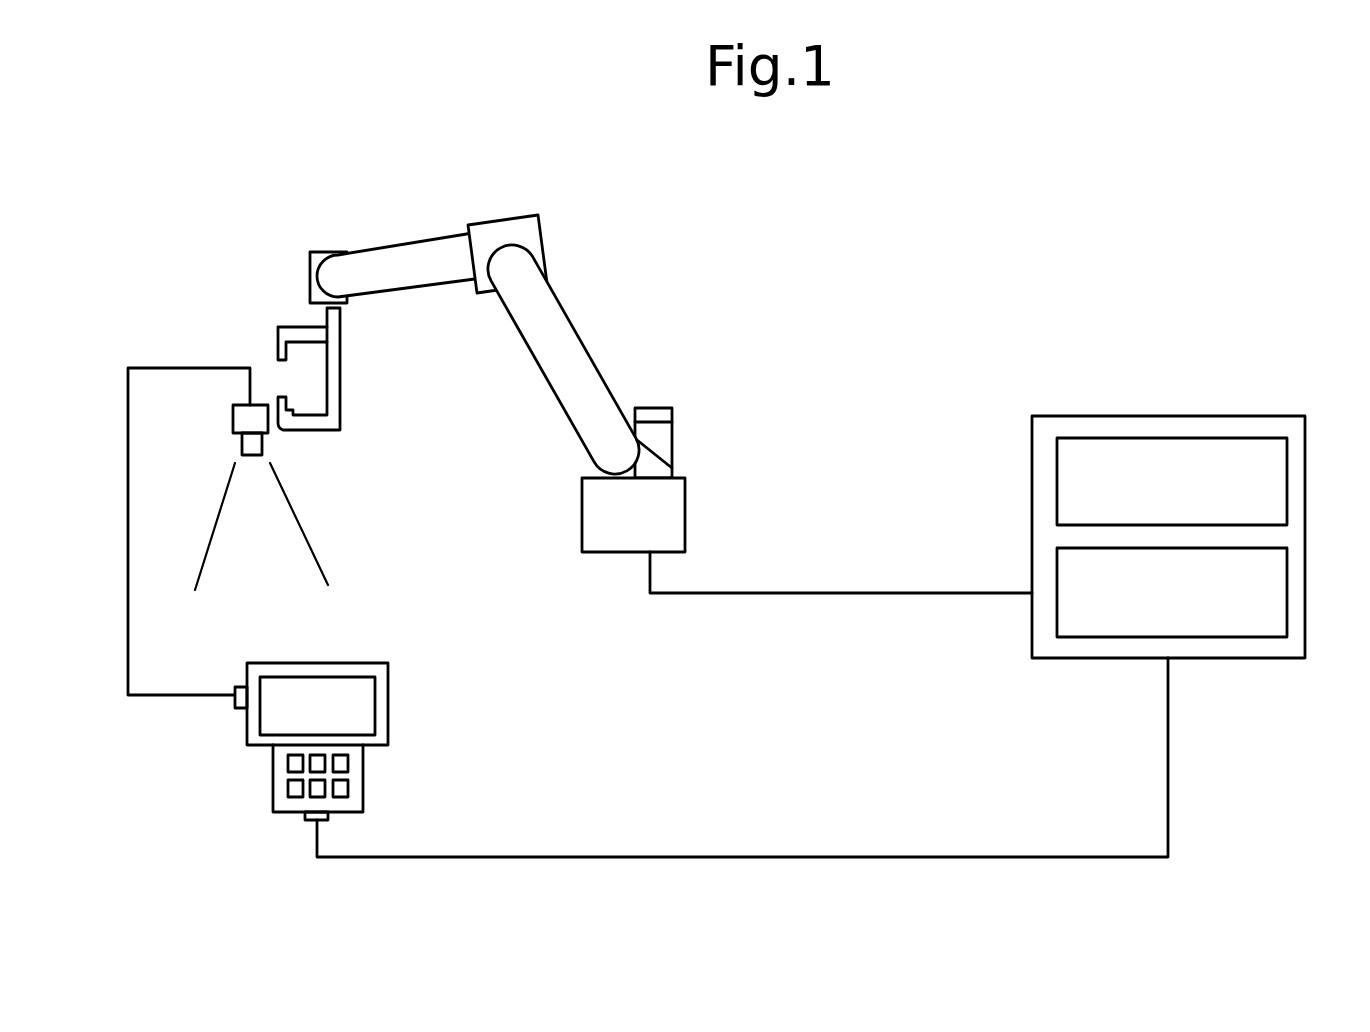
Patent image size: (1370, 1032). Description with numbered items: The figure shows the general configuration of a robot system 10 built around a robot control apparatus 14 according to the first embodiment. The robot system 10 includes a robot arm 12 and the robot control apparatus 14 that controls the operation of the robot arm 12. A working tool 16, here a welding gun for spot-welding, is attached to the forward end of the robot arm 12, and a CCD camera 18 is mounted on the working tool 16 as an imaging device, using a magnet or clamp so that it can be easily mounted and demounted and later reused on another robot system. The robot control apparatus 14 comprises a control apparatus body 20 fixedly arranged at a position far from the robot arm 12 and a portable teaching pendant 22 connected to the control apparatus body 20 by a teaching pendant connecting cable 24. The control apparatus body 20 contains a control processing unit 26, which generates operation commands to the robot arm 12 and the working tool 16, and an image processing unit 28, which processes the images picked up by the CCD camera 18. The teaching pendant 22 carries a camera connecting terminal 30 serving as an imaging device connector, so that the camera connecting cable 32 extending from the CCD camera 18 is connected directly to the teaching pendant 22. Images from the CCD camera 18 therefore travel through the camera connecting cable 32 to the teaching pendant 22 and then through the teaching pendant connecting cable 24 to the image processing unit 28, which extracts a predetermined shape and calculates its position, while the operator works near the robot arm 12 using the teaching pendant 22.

The robot system 10 is at (902, 211).
The robot arm 12 is at (503, 218).
The robot control apparatus 14 is at (1094, 388).
The working tool 16 is at (343, 370).
The CCD camera 18 is at (232, 417).
The control apparatus body 20 is at (1273, 415).
The teaching pendant 22 is at (390, 678).
The teaching pendant connecting cable 24 is at (687, 855).
The control processing unit 26 is at (1288, 468).
The image processing unit 28 is at (1288, 570).
The camera connecting terminal 30 is at (242, 686).
The camera connecting cable 32 is at (128, 572).